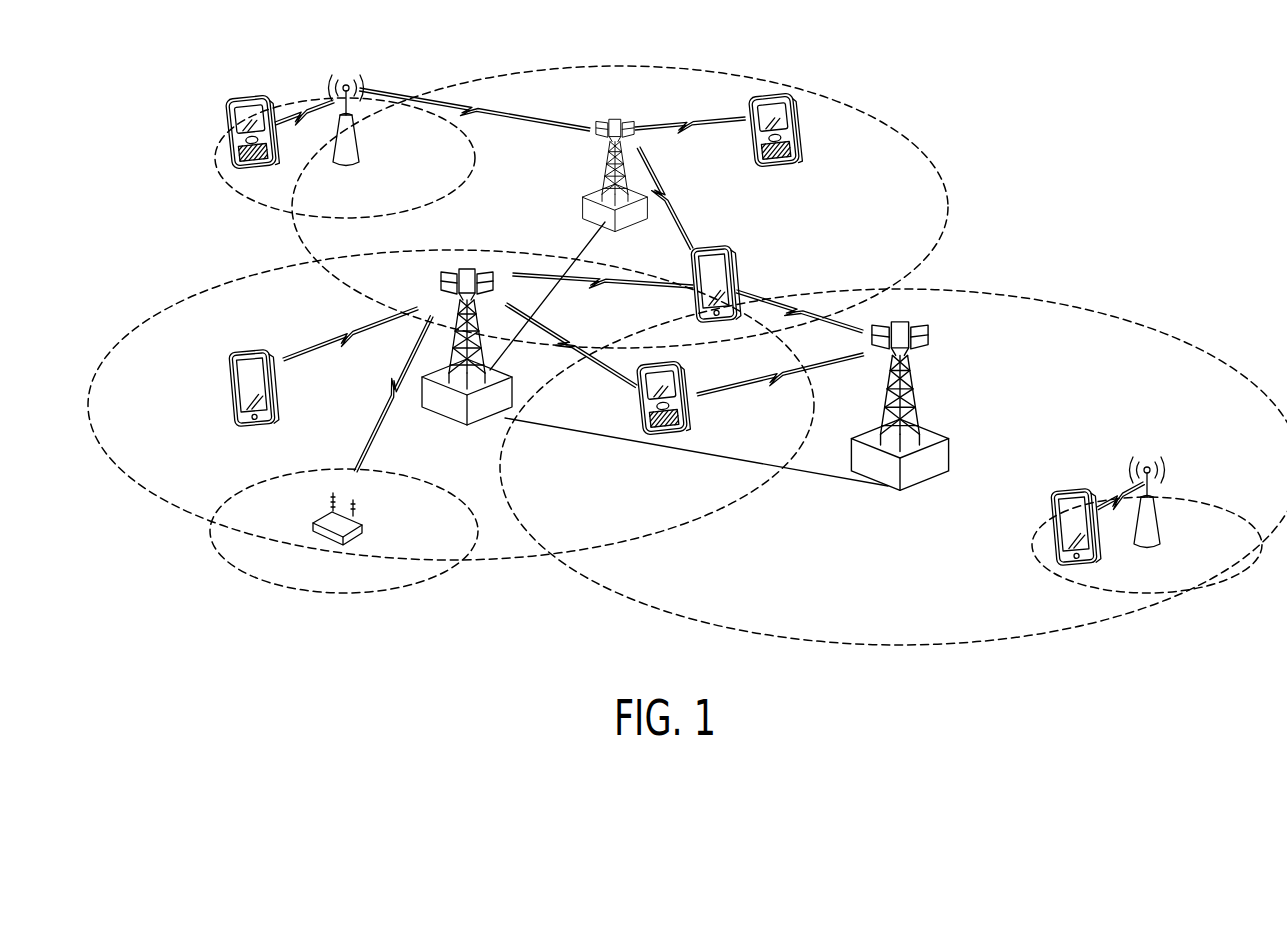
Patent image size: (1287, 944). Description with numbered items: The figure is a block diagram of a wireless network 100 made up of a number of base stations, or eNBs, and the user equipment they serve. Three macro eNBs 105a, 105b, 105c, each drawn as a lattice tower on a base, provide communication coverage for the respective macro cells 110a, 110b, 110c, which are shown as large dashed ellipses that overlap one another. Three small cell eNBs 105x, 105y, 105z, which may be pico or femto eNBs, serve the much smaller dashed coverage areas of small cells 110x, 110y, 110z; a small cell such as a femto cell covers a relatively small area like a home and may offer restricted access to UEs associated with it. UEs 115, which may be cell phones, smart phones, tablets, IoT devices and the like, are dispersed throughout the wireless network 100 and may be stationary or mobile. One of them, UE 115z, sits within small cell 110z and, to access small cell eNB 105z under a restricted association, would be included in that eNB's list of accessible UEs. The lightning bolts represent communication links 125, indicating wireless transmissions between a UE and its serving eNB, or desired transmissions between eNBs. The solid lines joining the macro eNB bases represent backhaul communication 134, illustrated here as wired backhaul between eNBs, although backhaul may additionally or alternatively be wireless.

The wireless network 100 is at (1040, 132).
The macro eNB 105a is at (460, 422).
The macro eNB 105b is at (583, 212).
The macro eNB 105c is at (932, 483).
The small cell eNB 105x is at (364, 532).
The small cell eNB 105y is at (358, 158).
The small cell eNB 105z is at (1158, 517).
The macro cell 110a is at (180, 303).
The macro cell 110b is at (773, 80).
The macro cell 110c is at (1092, 303).
The small cell 110x is at (277, 588).
The small cell 110y is at (236, 197).
The small cell 110z is at (1222, 582).
The UE 115 is at (228, 105).
The UE 115z is at (1053, 507).
The communication link 125 is at (302, 106).
The backhaul communication 134 is at (583, 252).